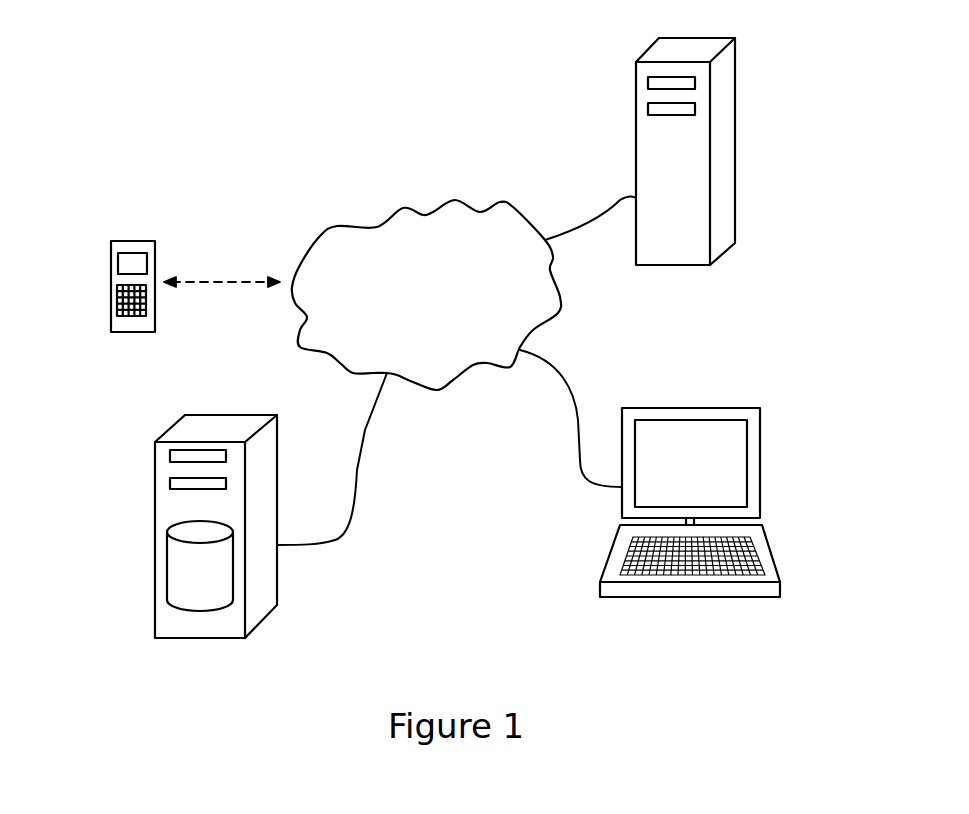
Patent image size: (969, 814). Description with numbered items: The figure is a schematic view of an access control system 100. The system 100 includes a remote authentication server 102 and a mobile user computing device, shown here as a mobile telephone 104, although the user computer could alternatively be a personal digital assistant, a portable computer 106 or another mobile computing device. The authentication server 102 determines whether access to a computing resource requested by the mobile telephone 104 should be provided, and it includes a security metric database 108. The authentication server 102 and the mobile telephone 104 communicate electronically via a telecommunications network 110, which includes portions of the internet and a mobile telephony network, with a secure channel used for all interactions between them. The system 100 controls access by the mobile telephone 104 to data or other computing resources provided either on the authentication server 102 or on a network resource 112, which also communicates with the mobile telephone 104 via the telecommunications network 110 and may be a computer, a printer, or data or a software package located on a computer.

The access control system 100 is at (69, 72).
The remote authentication server 102 is at (245, 538).
The mobile telephone 104 is at (160, 249).
The portable computer 106 is at (715, 597).
The security metric database 108 is at (221, 581).
The telecommunications network 110 is at (442, 302).
The network resource 112 is at (693, 265).